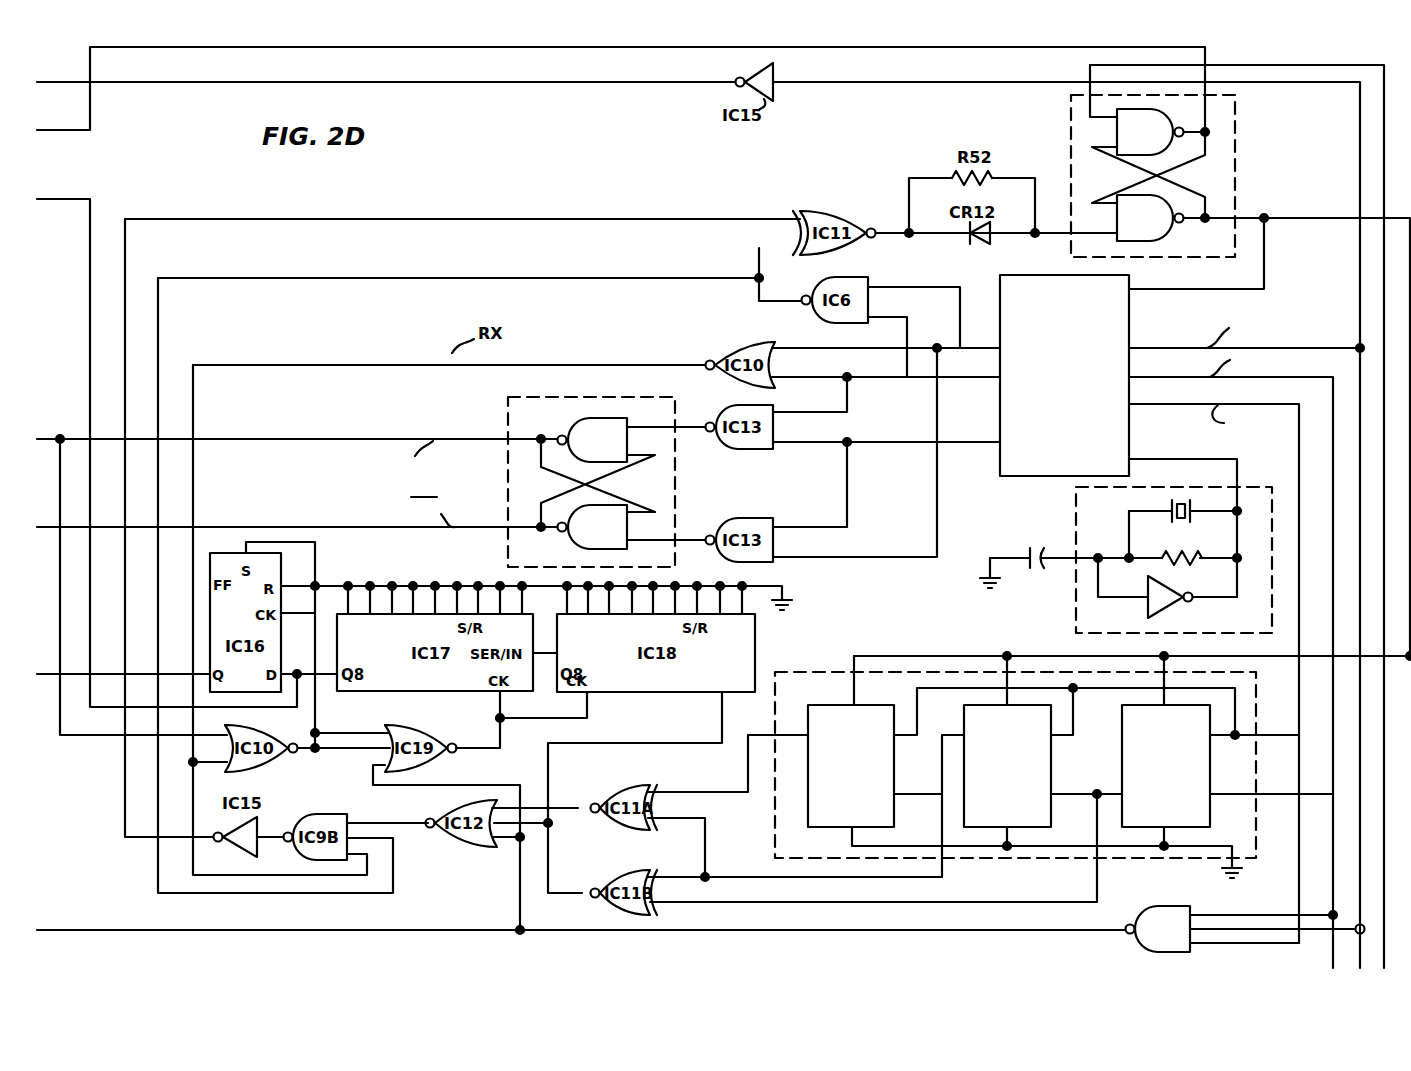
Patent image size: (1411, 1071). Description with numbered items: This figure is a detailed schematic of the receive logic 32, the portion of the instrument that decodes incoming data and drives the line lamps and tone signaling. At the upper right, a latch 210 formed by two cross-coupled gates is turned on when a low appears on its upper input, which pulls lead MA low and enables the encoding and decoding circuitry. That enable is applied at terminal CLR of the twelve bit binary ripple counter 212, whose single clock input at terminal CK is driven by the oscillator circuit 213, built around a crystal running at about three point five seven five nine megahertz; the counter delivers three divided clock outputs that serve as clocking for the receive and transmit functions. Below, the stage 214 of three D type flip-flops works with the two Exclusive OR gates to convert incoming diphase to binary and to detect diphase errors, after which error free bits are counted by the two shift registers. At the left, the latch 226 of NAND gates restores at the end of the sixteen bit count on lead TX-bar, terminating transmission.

The latch 210 is at (1237, 166).
The ripple counter 212 is at (1131, 320).
The oscillator circuit 213 is at (1126, 550).
The stage 214 is at (1038, 859).
The latch 226 is at (508, 405).
The receive logic 32 is at (1245, 943).